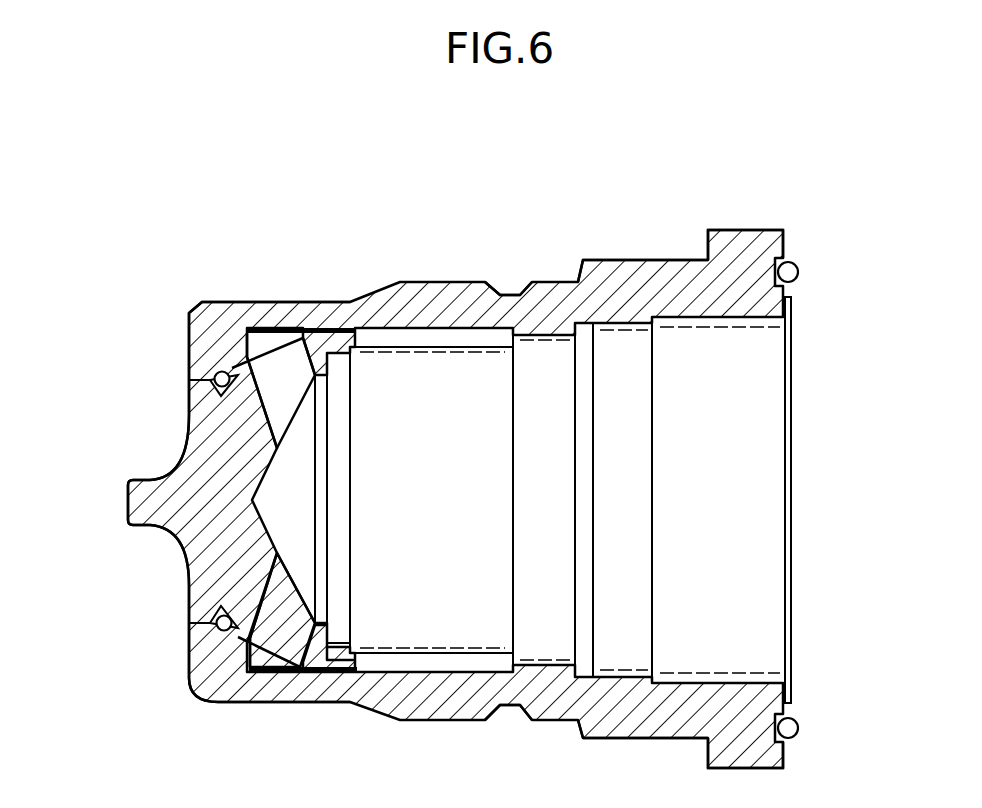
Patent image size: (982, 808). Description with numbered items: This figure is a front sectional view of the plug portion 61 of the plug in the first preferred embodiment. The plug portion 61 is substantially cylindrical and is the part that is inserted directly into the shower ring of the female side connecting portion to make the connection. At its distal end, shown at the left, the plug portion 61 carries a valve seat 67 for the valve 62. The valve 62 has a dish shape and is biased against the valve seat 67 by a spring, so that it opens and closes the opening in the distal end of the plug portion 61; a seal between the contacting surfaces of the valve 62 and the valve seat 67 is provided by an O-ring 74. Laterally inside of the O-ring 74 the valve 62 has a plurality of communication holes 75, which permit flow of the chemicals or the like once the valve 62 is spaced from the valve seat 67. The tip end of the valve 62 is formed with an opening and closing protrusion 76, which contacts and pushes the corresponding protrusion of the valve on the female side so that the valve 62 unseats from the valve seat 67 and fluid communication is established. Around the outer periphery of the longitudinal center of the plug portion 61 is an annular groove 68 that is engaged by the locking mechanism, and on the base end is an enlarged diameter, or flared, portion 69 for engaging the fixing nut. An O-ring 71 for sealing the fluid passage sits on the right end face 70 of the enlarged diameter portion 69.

The plug portion 61 is at (460, 250).
The valve 62 is at (164, 455).
The valve seat 67 is at (232, 632).
The annular groove 68 is at (507, 722).
The enlarged diameter portion 69 is at (722, 230).
The end face 70 is at (792, 236).
The O-ring 71 is at (800, 276).
The O-ring 74 is at (220, 376).
The communication holes 75 is at (290, 352).
The opening and closing protrusion 76 is at (125, 498).